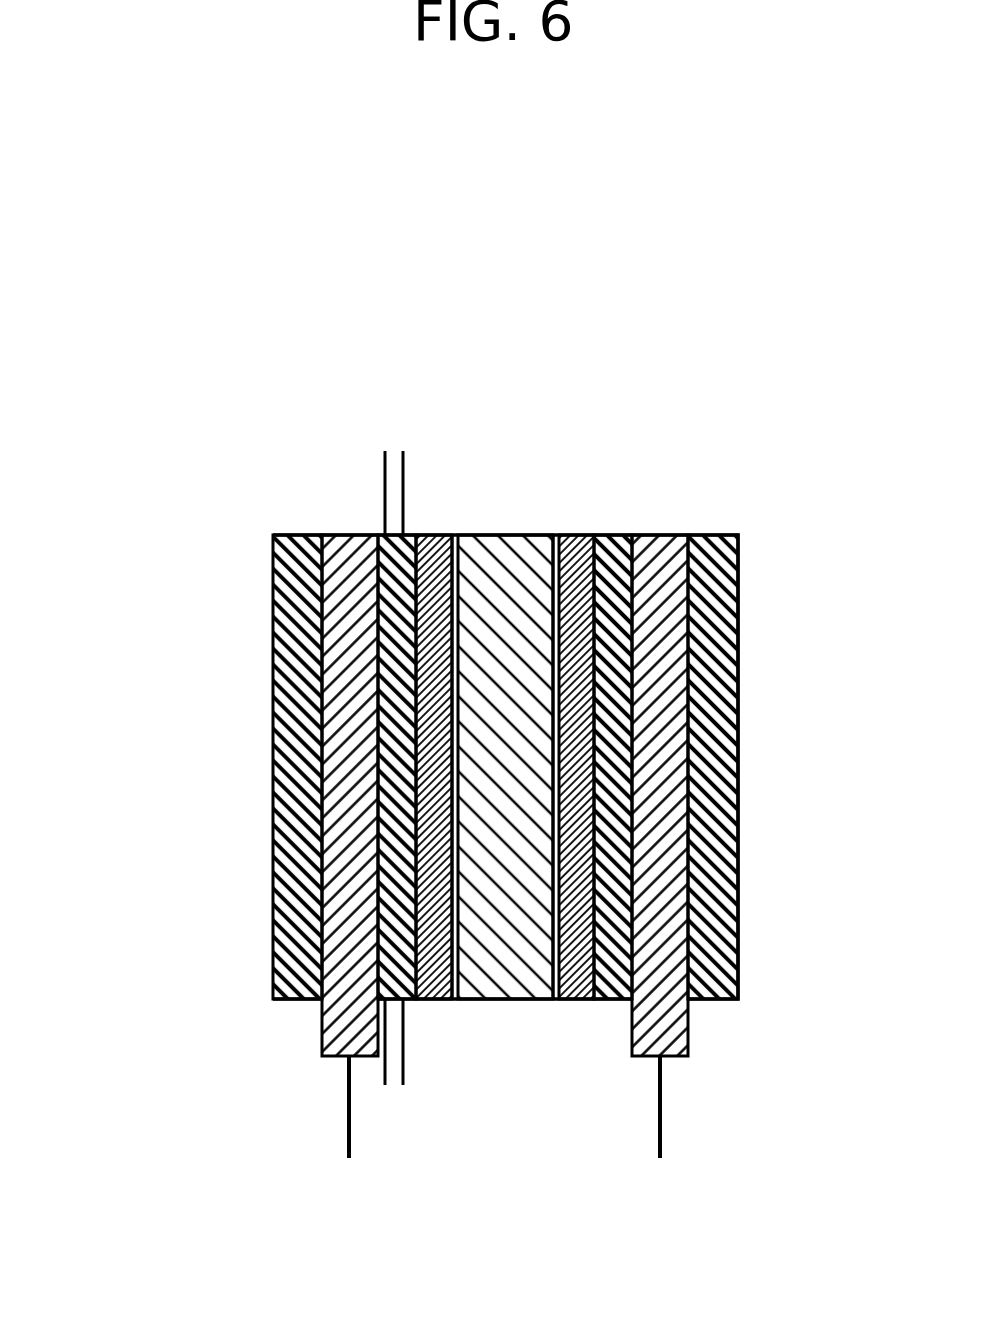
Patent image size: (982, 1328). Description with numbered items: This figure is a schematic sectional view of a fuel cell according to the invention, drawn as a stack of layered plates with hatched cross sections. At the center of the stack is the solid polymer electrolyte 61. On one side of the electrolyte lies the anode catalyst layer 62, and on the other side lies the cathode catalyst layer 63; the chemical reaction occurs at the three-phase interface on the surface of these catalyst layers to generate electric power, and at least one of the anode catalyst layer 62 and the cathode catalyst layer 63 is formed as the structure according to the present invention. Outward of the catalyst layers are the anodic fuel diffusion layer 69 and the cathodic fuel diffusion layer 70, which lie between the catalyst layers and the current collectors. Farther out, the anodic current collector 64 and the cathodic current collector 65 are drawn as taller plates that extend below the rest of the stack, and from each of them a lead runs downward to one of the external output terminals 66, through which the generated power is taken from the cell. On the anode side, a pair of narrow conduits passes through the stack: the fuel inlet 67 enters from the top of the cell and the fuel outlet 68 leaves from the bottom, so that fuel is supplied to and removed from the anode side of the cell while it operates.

The solid polymer electrolyte 61 is at (512, 593).
The anode catalyst layer 62 is at (437, 728).
The cathode catalyst layer 63 is at (577, 720).
The anodic current collector 64 is at (350, 557).
The cathodic current collector 65 is at (660, 590).
The external output terminals 66 is at (347, 1125).
The fuel inlet 67 is at (405, 480).
The fuel outlet 68 is at (403, 1047).
The anodic fuel diffusion layer 69 is at (384, 535).
The cathodic fuel diffusion layer 70 is at (617, 535).